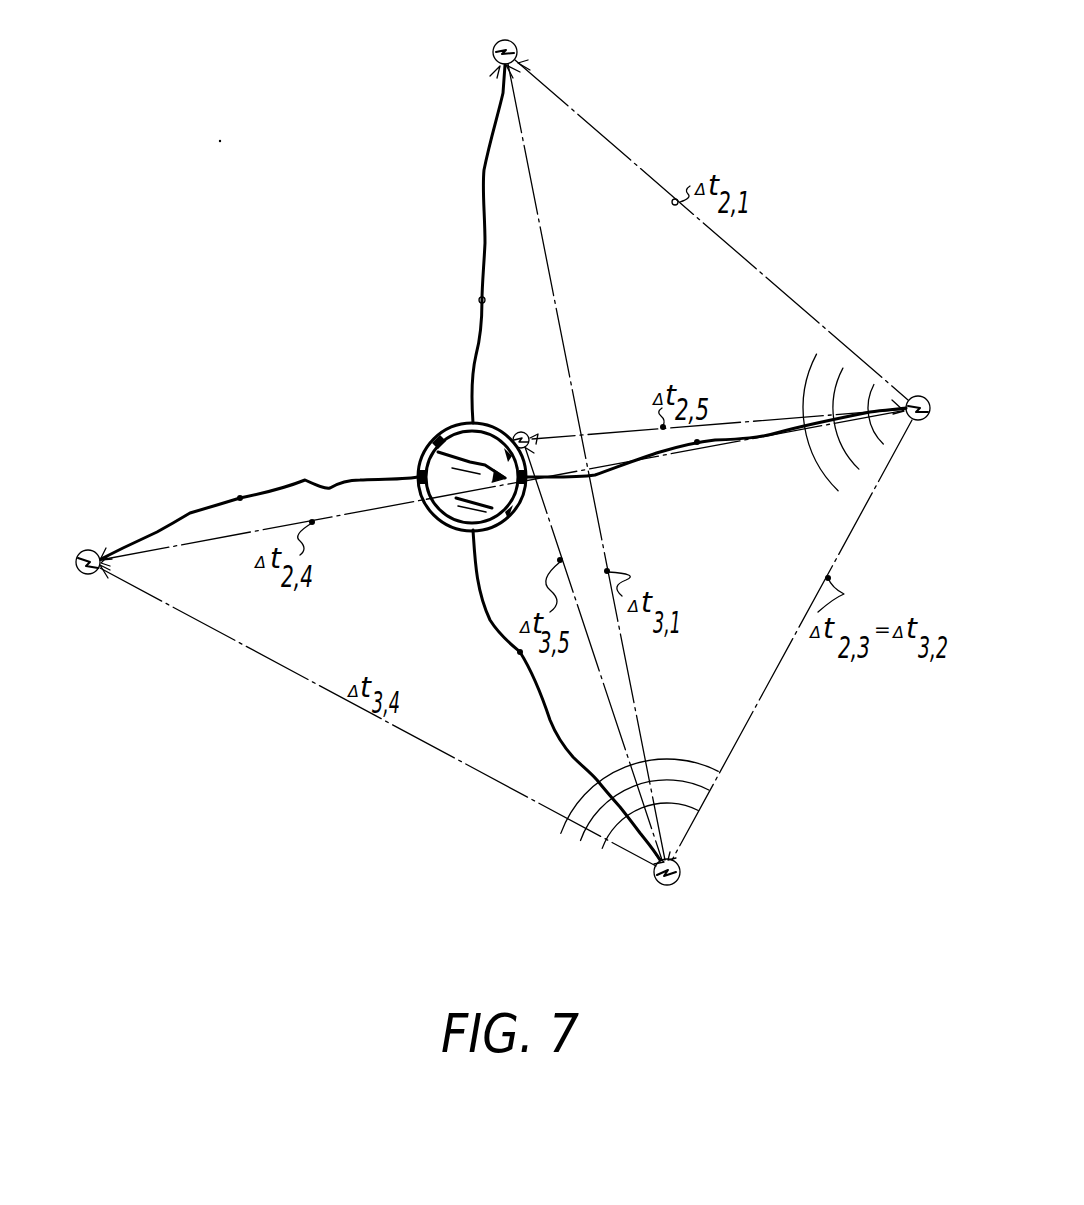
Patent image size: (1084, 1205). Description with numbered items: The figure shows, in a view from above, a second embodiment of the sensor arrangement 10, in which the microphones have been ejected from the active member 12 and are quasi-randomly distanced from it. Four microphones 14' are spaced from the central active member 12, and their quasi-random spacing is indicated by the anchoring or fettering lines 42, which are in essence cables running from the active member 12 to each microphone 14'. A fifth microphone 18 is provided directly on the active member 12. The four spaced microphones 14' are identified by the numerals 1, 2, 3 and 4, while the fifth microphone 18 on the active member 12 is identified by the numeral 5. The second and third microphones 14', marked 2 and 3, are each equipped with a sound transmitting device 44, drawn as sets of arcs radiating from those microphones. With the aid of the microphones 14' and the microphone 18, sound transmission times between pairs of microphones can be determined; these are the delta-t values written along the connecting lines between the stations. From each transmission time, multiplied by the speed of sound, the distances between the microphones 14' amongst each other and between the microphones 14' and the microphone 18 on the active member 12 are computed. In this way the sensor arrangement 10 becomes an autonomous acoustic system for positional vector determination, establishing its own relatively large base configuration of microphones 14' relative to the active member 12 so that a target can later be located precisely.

The first microphone identifier 1 is at (505, 36).
The second microphone identifier 2 is at (875, 422).
The third microphone identifier 3 is at (640, 827).
The fourth microphone identifier 4 is at (88, 546).
The fifth microphone identifier 5 is at (527, 400).
The sensor arrangement 10 is at (757, 148).
The active member 12 is at (463, 483).
The microphone 14' is at (295, 340).
The fifth microphone 18 is at (521, 432).
The anchoring or fettering line 42 is at (479, 300).
The sound transmitting device 44 is at (760, 649).